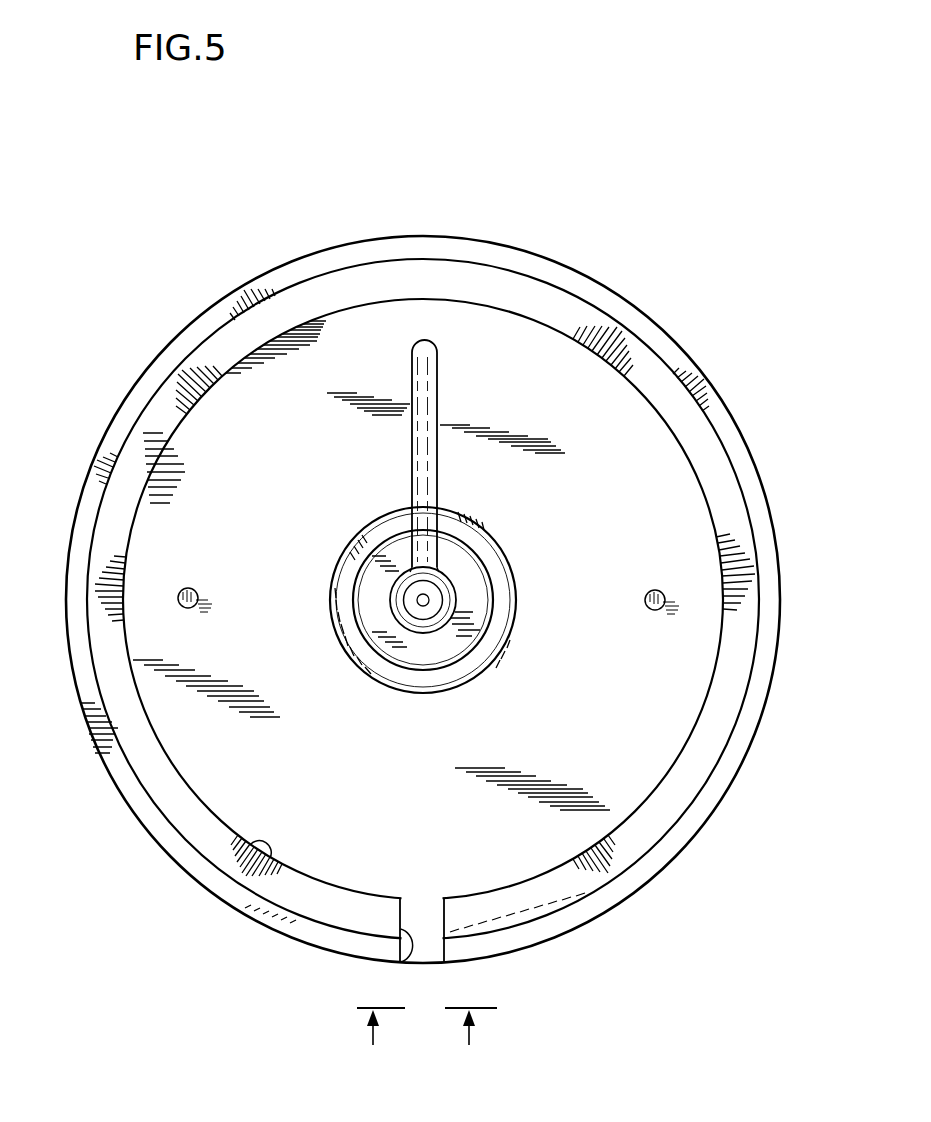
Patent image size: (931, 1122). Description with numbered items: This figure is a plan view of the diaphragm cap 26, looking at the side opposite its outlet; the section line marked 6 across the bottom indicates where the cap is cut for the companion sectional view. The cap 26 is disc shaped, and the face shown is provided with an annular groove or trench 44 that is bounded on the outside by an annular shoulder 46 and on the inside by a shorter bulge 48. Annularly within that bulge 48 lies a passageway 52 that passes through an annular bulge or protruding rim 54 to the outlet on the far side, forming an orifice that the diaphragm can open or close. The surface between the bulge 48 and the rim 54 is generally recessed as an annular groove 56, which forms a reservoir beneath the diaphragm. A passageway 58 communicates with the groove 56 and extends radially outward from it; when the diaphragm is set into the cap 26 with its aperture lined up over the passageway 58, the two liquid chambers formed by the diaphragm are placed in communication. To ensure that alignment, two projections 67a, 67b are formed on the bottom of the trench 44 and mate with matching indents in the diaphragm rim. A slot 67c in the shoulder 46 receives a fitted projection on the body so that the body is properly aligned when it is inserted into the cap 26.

The cap 26 is at (138, 826).
The annular groove or trench 44 is at (373, 790).
The annular shoulder 46 is at (257, 843).
The bulge 48 is at (510, 560).
The passageway 52 is at (423, 600).
The annular bulge or protruding rim 54 is at (423, 600).
The annular groove 56 is at (427, 632).
The passageway 58 is at (435, 407).
The projection 67a is at (178, 601).
The projection 67b is at (667, 592).
The slot 67c is at (405, 962).
The section line 6- 6 is at (427, 1041).